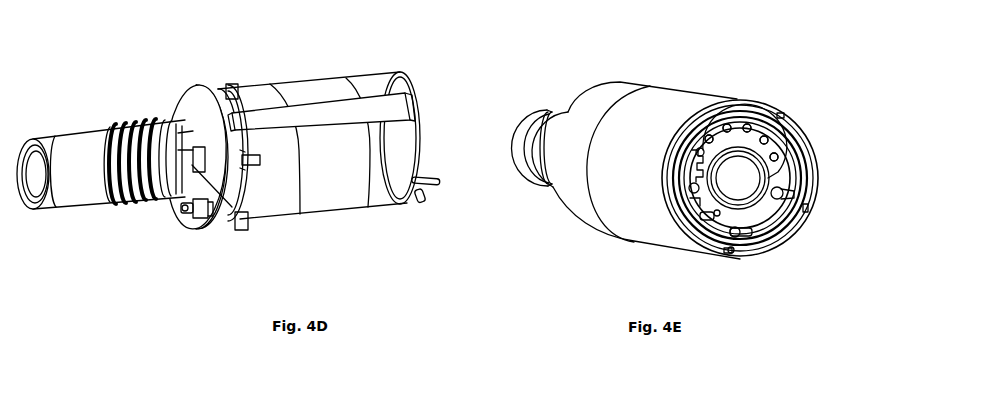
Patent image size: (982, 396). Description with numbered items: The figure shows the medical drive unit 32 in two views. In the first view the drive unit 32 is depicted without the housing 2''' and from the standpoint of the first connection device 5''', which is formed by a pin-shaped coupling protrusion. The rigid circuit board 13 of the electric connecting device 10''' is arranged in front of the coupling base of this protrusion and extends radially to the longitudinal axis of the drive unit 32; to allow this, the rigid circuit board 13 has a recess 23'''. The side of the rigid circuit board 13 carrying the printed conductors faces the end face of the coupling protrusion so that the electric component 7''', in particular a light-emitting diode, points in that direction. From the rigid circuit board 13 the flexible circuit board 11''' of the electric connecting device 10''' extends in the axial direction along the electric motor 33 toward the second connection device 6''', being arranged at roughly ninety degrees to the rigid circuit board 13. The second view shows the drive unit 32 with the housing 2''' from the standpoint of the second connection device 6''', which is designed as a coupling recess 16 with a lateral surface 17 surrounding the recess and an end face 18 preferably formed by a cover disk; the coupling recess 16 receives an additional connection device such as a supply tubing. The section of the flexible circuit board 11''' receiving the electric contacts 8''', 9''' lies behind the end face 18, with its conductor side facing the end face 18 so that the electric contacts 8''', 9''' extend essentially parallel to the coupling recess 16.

In FIG. 4D, the medical drive unit 32 is at (177, 39).
In FIG. 4E, the medical drive unit 32 is at (751, 53).
In FIG. 4E, the housing 2''' is at (636, 155).
In FIG. 4D, the first connection device 5''' is at (111, 149).
In FIG. 4E, the first connection device 5''' is at (531, 127).
In FIG. 4E, the second connection device 6''' is at (740, 198).
In FIG. 4D, the electric component 7''' is at (205, 232).
In FIG. 4E, the electric contact 8''' is at (788, 141).
In FIG. 4E, the electric contact 9''' is at (741, 142).
In FIG. 4D, the electric connecting device 10''' is at (321, 86).
In FIG. 4D, the flexible circuit board 11''' is at (329, 130).
In FIG. 4E, the flexible circuit board 11''' is at (754, 154).
In FIG. 4D, the rigid circuit board 13 is at (177, 103).
In FIG. 4E, the coupling recess 16 is at (808, 185).
In FIG. 4E, the lateral surface 17 is at (780, 233).
In FIG. 4E, the end face 18 is at (772, 207).
In FIG. 4D, the recess 23''' is at (256, 174).
In FIG. 4D, the electric motor 33 is at (315, 87).